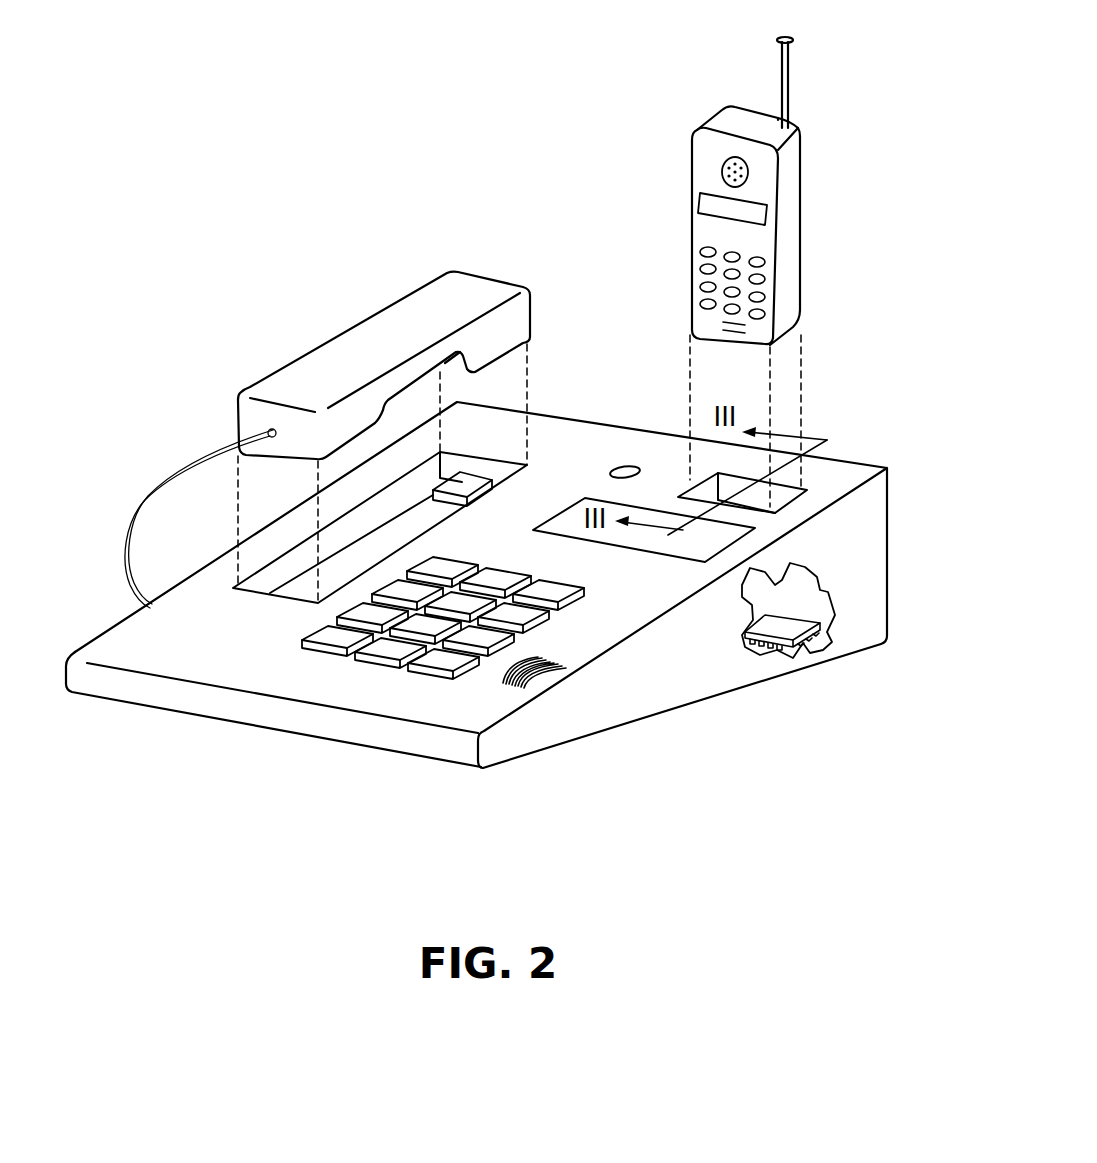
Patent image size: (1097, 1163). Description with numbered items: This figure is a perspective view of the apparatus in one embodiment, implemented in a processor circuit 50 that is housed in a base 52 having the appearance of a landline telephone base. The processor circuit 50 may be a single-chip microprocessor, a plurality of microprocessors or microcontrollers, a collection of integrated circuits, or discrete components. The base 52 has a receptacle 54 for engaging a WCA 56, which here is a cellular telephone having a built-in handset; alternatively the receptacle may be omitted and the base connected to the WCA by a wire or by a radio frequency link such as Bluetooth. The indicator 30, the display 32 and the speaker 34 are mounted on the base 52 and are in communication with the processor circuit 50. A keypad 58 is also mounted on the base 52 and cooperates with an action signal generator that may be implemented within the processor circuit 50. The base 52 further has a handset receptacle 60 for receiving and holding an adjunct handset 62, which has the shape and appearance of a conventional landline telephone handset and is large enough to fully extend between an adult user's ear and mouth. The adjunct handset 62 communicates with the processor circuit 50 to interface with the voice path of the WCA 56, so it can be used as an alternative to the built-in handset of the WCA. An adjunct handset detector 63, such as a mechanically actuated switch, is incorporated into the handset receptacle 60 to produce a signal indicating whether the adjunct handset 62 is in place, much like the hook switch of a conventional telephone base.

The indicator 30 is at (622, 467).
The display 32 is at (715, 548).
The speaker 34 is at (518, 683).
The processor circuit 50 is at (787, 622).
The base 52 is at (868, 508).
The receptacle 54 is at (718, 486).
The WCA 56 is at (793, 196).
The keypad 58 is at (365, 673).
The handset receptacle 60 is at (323, 553).
The adjunct handset 62 is at (315, 362).
The adjunct handset detector 63 is at (473, 482).